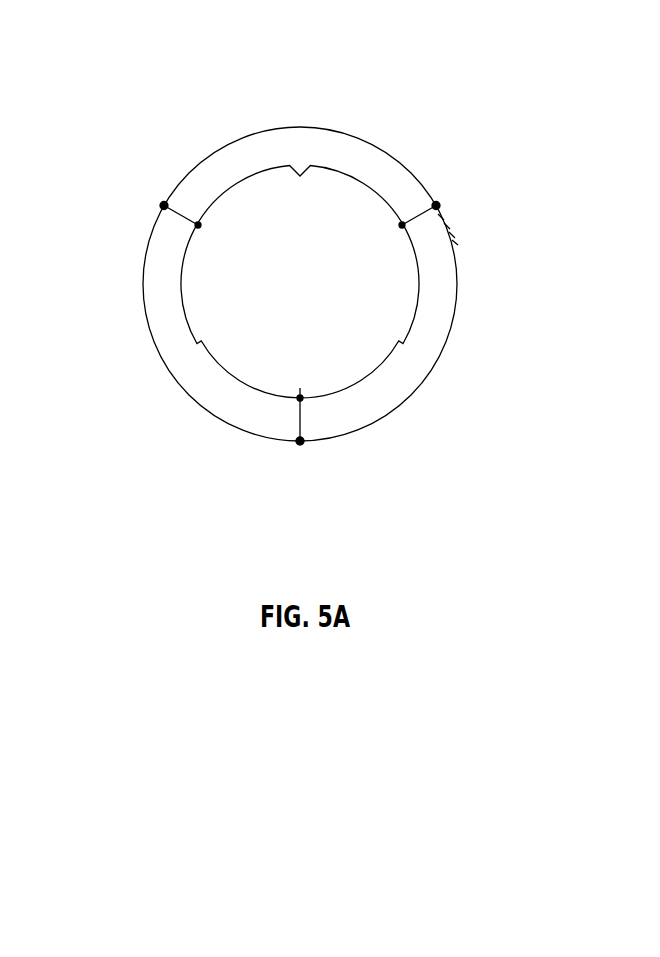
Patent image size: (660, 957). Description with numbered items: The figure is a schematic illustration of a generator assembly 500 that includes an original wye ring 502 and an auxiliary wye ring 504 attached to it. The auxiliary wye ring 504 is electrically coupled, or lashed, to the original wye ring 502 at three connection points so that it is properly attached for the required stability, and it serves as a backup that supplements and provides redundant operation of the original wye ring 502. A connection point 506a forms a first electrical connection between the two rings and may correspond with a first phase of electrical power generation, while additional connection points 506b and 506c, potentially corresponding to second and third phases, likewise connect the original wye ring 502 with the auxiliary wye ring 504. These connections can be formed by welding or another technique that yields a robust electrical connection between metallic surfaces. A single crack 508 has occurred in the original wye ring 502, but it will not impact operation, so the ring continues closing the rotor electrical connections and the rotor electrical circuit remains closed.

The generator assembly 500 is at (321, 266).
The original wye ring 502 is at (387, 153).
The auxiliary wye ring 504 is at (178, 310).
The connection point 506a is at (164, 206).
The connection point 506b is at (436, 206).
The connection point 506c is at (300, 441).
The single crack 508 is at (460, 243).